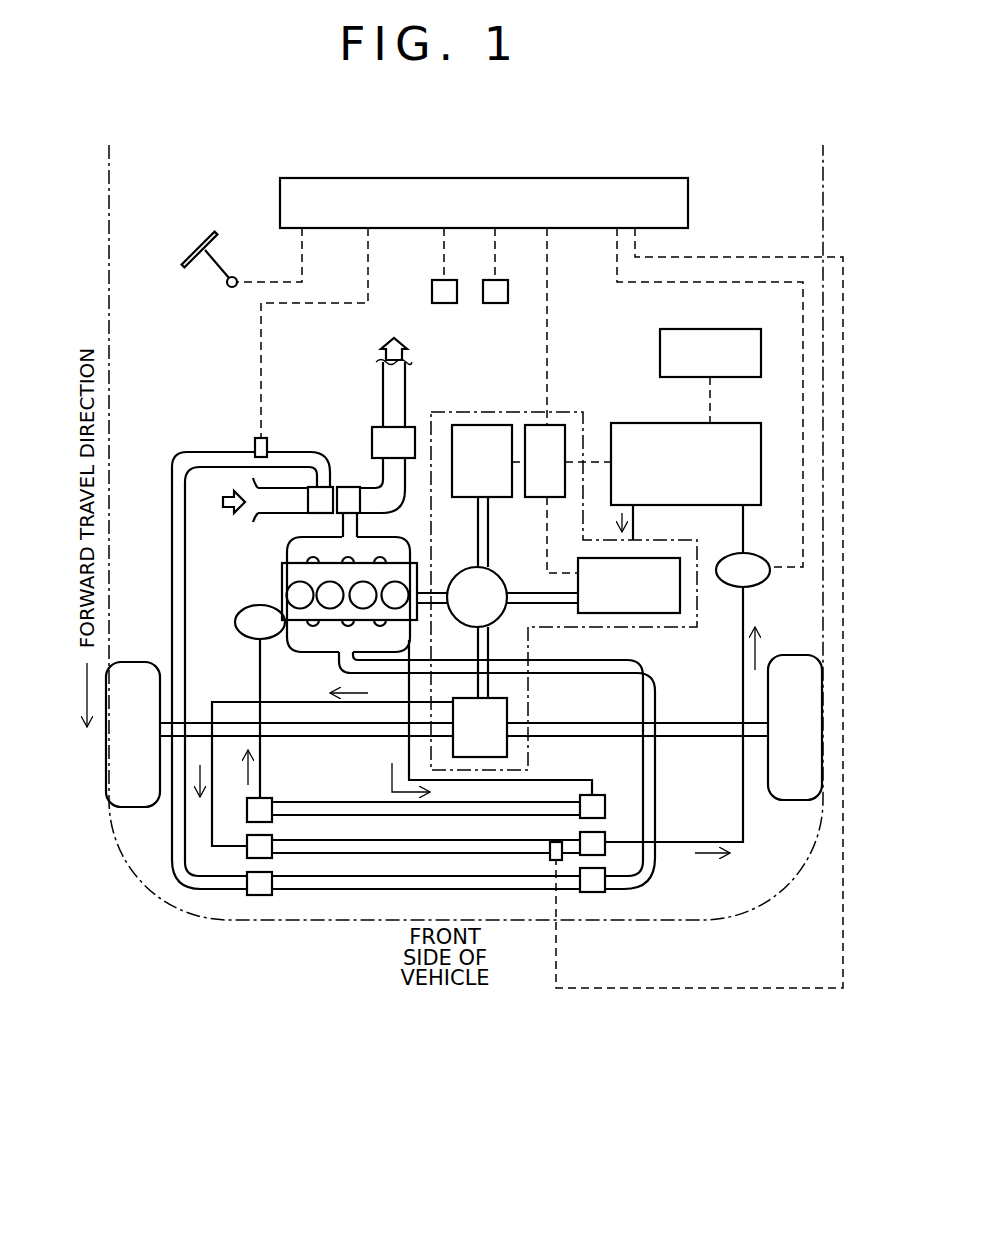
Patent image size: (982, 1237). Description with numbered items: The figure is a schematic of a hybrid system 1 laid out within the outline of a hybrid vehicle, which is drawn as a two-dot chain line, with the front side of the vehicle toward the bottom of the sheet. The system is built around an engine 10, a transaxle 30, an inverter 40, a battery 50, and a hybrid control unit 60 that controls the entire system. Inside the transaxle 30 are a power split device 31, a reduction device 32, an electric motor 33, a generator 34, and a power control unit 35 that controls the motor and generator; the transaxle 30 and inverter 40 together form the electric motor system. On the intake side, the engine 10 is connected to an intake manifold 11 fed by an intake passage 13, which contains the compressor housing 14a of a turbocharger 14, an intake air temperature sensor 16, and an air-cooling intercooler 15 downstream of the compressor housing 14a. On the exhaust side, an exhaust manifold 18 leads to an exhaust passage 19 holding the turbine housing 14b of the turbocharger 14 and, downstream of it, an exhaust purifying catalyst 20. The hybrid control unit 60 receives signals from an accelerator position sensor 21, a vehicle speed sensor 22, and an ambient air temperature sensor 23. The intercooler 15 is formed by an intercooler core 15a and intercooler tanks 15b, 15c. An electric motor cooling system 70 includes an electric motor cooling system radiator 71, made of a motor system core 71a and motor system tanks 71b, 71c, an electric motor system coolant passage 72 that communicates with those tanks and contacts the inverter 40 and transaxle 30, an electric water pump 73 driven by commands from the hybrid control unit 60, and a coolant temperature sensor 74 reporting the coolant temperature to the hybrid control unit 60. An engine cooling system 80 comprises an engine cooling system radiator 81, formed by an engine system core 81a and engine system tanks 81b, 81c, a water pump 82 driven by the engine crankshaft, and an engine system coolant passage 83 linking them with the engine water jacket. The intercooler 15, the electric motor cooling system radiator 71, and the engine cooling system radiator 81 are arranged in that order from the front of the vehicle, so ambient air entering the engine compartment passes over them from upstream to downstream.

The hybrid system 1 is at (722, 1023).
The engine 10 is at (317, 594).
The intake manifold 11 is at (312, 652).
The intake passage 13 is at (172, 590).
The turbocharger 14 is at (322, 442).
The compressor housing 14a is at (332, 485).
The turbine housing 14b is at (347, 459).
The intercooler 15 is at (423, 954).
The intercooler core 15a is at (390, 892).
The intercooler tank 15b is at (254, 896).
The intercooler tank 15c is at (598, 892).
The intake air temperature sensor 16 is at (255, 443).
The exhaust manifold 18 is at (287, 553).
The exhaust passage 19 is at (362, 517).
The exhaust purifying catalyst 20 is at (408, 428).
The accelerator position sensor 21 is at (240, 269).
The vehicle speed sensor 22 is at (445, 303).
The ambient air temperature sensor 23 is at (495, 303).
The transaxle 30 is at (582, 563).
The power split device 31 is at (498, 562).
The reduction device 32 is at (507, 703).
The electric motor 33 is at (680, 553).
The generator 34 is at (490, 425).
The power control unit 35 is at (558, 425).
The inverter 40 is at (730, 422).
The battery 50 is at (700, 329).
The hybrid control unit 60 is at (567, 228).
The electric motor cooling system 70 is at (467, 736).
The electric motor cooling system radiator 71 is at (491, 938).
The motor system core 71a is at (350, 855).
The motor system tank 71b is at (273, 860).
The motor system tank 71c is at (605, 850).
The electric motor system coolant passage 72 is at (637, 513).
The electric water pump 73 is at (767, 585).
The coolant temperature sensor 74 is at (558, 840).
The engine cooling system 80 is at (400, 795).
The engine cooling system radiator 81 is at (426, 861).
The engine system core 81a is at (348, 818).
The engine system tank 81b is at (608, 800).
The engine system tank 81c is at (250, 824).
The water pump 82 is at (247, 640).
The engine system coolant passage 83 is at (262, 667).